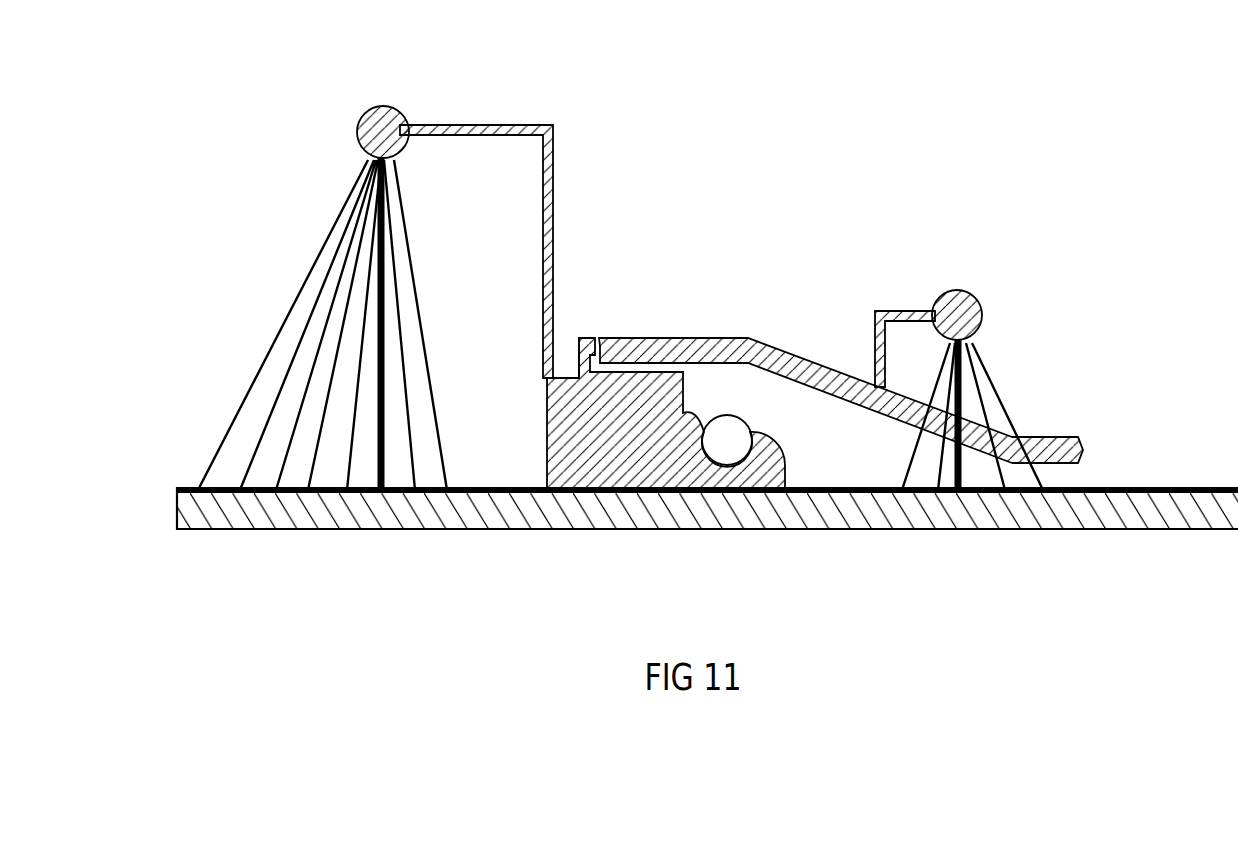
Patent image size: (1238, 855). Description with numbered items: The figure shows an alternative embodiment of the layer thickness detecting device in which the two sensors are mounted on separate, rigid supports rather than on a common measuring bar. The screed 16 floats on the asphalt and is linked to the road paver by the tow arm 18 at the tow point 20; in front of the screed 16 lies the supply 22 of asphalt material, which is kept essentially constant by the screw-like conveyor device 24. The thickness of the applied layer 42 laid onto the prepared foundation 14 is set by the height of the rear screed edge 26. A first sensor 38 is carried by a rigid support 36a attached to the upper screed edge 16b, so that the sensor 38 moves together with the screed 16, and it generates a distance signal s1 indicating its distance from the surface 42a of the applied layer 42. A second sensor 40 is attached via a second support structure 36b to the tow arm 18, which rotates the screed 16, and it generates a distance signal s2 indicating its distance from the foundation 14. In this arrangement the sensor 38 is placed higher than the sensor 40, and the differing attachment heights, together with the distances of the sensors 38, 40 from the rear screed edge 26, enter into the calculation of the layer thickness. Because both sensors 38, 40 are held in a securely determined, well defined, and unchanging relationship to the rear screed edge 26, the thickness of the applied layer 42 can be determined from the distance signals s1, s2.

The foundation 14 is at (1180, 490).
The screed 16 is at (617, 465).
The upper screed edge 16b is at (572, 377).
The tow arm 18 is at (712, 337).
The tow point 20 is at (1085, 450).
The supply of asphalt material 22 is at (785, 494).
The screw-like conveyor device 24 is at (718, 450).
The rear screed edge 26 is at (545, 494).
The rigid support 36a is at (526, 124).
The second support structure 36b is at (905, 311).
The first sensor 38 is at (383, 105).
The second sensor 40 is at (970, 293).
The applied layer 42 is at (305, 494).
The surface of the applied layer 42a is at (232, 482).
The distance signal s1 is at (383, 297).
The distance signal s2 is at (952, 398).